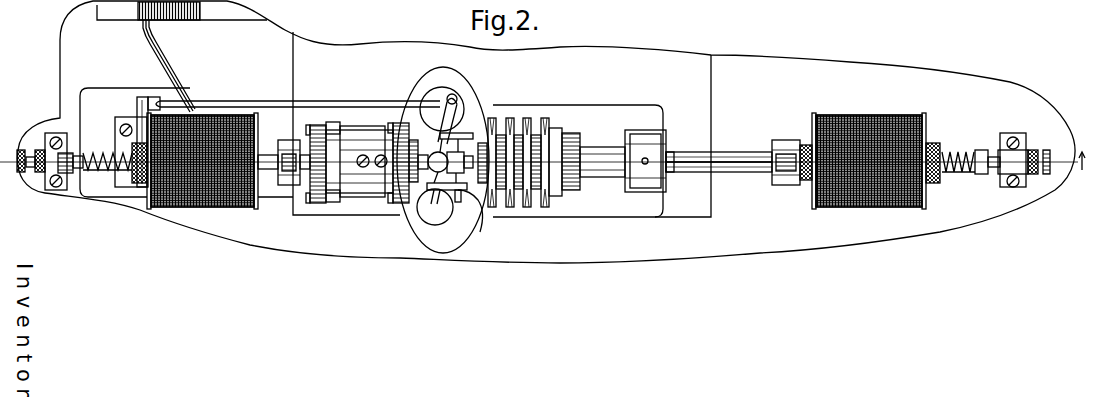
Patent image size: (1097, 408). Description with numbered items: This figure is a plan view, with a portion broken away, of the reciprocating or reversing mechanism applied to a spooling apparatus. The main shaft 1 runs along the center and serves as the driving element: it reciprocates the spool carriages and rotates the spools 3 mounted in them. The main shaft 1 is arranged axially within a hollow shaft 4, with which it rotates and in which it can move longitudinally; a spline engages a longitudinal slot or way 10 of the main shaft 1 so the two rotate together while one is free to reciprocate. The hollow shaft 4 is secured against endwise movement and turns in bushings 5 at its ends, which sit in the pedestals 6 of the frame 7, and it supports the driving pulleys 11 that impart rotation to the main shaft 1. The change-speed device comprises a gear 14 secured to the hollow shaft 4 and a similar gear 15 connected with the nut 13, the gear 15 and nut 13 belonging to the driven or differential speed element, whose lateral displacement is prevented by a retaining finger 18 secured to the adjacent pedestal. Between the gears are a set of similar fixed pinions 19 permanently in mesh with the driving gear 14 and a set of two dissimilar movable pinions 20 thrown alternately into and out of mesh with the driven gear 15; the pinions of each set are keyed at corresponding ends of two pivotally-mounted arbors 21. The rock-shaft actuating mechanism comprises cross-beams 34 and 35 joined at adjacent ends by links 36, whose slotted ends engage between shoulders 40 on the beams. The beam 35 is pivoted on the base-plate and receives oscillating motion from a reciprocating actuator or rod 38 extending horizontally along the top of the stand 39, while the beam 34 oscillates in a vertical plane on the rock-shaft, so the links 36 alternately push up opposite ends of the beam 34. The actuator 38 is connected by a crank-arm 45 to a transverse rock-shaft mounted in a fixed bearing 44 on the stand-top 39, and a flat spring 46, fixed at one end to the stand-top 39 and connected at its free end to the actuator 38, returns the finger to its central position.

The main shaft 1 is at (726, 152).
The spool 3 is at (228, 207).
The hollow shaft 4 is at (598, 150).
The bushing 5 is at (668, 142).
The pedestal 6 is at (652, 190).
The frame 7 is at (612, 217).
The longitudinal slot or way 10 is at (754, 172).
The driving pulley 11 is at (530, 126).
The nut 13 is at (1088, 161).
The gear 14 is at (440, 113).
The gear 15 is at (290, 186).
The retaining finger 18 is at (359, 161).
The fixed pinion 19 is at (400, 122).
The movable pinion 20 is at (318, 124).
The arbor 21 is at (335, 124).
The cross-beam 34 is at (481, 232).
The cross-beam 35 is at (435, 208).
The link 36 is at (470, 137).
The reciprocating actuator or rod 38 is at (447, 104).
The stand 39 is at (178, 224).
The shoulder 40 is at (468, 191).
The fixed bearing 44 is at (126, 124).
The crank-arm 45 is at (147, 97).
The flat spring 46 is at (172, 74).